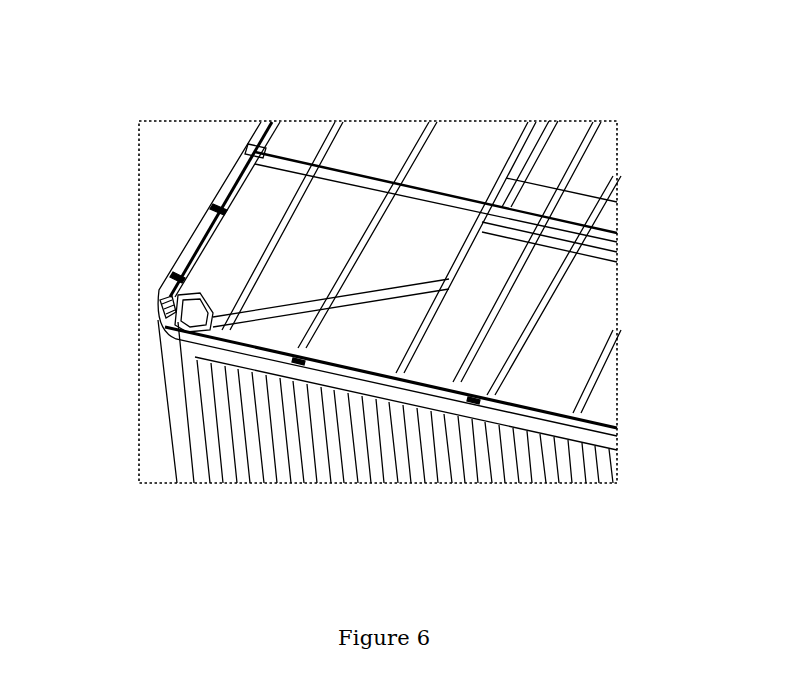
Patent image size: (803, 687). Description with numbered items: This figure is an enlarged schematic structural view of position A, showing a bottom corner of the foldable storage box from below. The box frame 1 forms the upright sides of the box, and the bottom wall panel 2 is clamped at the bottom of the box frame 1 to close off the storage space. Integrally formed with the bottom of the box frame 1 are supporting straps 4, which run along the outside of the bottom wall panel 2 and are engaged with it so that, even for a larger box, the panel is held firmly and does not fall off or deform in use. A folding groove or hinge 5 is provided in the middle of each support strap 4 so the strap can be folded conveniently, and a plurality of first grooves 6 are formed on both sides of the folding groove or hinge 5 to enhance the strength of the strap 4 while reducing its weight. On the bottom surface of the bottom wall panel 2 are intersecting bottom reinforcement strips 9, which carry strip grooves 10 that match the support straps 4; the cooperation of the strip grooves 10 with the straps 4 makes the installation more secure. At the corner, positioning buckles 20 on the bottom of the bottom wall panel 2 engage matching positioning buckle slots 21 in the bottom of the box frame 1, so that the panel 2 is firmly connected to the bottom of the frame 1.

The position A is at (158, 118).
The box frame 1 is at (322, 430).
The bottom wall panel 2 is at (345, 200).
The supporting strap 4 is at (525, 192).
The folding groove or hinge 5 is at (548, 225).
The first grooves 6 is at (597, 173).
The bottom reinforcement strips 9 is at (598, 262).
The strip grooves 10 is at (568, 265).
The positioning buckles 20 is at (163, 322).
The positioning buckle slots 21 is at (167, 307).